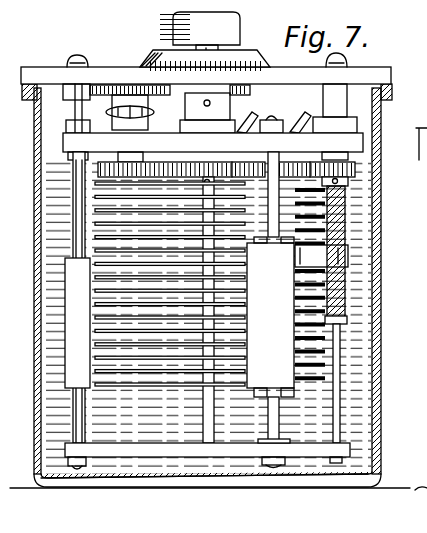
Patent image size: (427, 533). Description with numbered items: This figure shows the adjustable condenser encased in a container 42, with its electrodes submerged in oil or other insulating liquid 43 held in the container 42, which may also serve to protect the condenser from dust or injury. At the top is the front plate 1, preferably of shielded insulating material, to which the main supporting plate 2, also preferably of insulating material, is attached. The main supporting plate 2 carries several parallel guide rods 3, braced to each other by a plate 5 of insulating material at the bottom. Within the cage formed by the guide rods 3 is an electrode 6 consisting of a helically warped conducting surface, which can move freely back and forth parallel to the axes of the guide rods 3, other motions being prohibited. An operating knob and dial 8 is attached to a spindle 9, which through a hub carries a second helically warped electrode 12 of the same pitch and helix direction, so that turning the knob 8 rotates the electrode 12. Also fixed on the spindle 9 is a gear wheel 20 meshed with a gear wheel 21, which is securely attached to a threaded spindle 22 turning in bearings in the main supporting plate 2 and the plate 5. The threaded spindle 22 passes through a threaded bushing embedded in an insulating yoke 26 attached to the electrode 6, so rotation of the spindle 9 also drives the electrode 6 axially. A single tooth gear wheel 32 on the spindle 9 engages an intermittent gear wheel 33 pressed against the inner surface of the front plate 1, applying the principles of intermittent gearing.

The front plate 1 is at (107, 78).
The main supporting plate 2 is at (100, 140).
The guide rods 3 is at (78, 233).
The plate 5 is at (239, 447).
The electrode 6 is at (311, 377).
The operating knob and dial 8 is at (170, 62).
The spindle 9 is at (205, 430).
The electrode 12 is at (300, 213).
The gear wheel 20 is at (110, 170).
The gear wheel 21 is at (363, 172).
The threaded spindle 22 is at (340, 352).
The insulating yoke 26 is at (348, 258).
The single tooth gear wheel 32 is at (250, 90).
The intermittent gear wheel 33 is at (85, 88).
The container 42 is at (346, 285).
The insulating liquid 43 is at (356, 320).